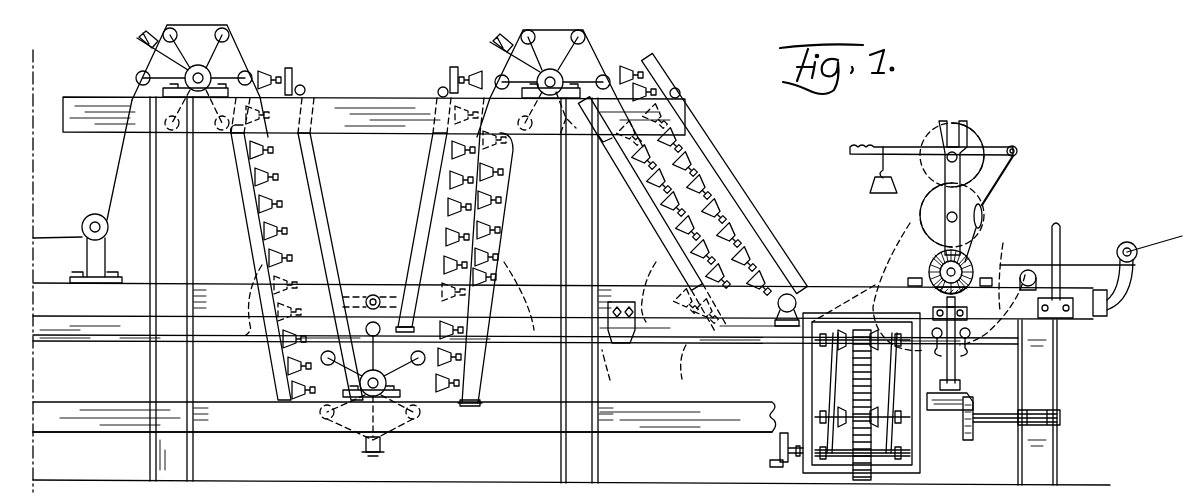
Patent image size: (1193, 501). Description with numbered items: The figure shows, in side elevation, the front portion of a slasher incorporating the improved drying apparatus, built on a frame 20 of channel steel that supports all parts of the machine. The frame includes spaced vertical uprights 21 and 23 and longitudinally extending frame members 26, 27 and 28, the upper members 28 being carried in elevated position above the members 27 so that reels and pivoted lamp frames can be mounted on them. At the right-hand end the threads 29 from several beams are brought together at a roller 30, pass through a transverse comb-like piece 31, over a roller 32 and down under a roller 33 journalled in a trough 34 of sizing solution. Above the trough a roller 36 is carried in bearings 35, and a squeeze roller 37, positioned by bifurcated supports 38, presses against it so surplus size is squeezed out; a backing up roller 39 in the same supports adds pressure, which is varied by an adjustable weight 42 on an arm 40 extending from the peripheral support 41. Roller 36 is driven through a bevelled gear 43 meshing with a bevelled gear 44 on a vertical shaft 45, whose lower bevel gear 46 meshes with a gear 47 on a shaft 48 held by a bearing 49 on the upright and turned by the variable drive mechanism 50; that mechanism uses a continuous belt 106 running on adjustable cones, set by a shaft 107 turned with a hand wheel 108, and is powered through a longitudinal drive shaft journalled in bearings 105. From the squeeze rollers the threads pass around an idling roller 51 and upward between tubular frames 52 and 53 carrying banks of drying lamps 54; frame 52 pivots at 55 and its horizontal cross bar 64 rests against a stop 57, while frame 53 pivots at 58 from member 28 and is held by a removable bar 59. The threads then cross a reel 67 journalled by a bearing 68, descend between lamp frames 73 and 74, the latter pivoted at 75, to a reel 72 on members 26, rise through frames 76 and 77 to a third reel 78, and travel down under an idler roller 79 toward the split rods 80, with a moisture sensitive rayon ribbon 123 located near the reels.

The frame 20 is at (358, 88).
The upright 21 is at (1047, 396).
The upright 23 is at (153, 366).
The lower longitudinal frame member 26 is at (524, 434).
The longitudinal frame member 27 is at (582, 378).
The longitudinal frame member 28 is at (378, 130).
The threads 29 is at (38, 238).
The roller 30 is at (1124, 242).
The comb-like piece 31 is at (1072, 208).
The roller 32 is at (1030, 270).
The roller 33 is at (1002, 269).
The trough 34 is at (1028, 330).
The bearings 35 is at (910, 282).
The roller 36 is at (931, 248).
The squeeze roller 37 is at (990, 194).
The bifurcated supports 38 is at (963, 123).
The backing up roller 39 is at (933, 137).
The arm 40 is at (852, 147).
The peripheral support 41 is at (1014, 150).
The adjustable weight 42 is at (870, 184).
The bevelled gear 43 is at (927, 270).
The bevelled gear 44 is at (968, 342).
The vertical shaft 45 is at (956, 372).
The bevel gear 46 is at (945, 412).
The gear 47 is at (972, 436).
The shaft 48 is at (996, 428).
The bearing 49 is at (1040, 426).
The variable drive mechanism 50 is at (814, 360).
The idling roller 51 is at (787, 294).
The tubular frame 52 is at (702, 139).
The tubular frame 53 is at (621, 199).
The drying lamps 54 is at (242, 168).
The pivot 55 is at (803, 292).
The stop 57 is at (296, 82).
The pivot 58 is at (602, 142).
The removable bar 59 is at (232, 344).
The horizontal cross bar 64 is at (308, 88).
The reel 67 is at (578, 66).
The bearing 68 is at (551, 129).
The reel 72 is at (410, 385).
The lamp frame 73 is at (511, 190).
The lamp frame 74 is at (424, 174).
The pivot 75 is at (374, 292).
The lamp frame 76 is at (329, 175).
The lamp frame 77 is at (234, 195).
The reel 78 is at (221, 52).
The idler roller 79 is at (93, 210).
The split rods 80 is at (437, 494).
The bearings 105 is at (471, 384).
The continuous belt 106 is at (853, 378).
The shaft 107 is at (859, 456).
The hand wheel 108 is at (778, 452).
The rayon ribbon 123 is at (134, 38).